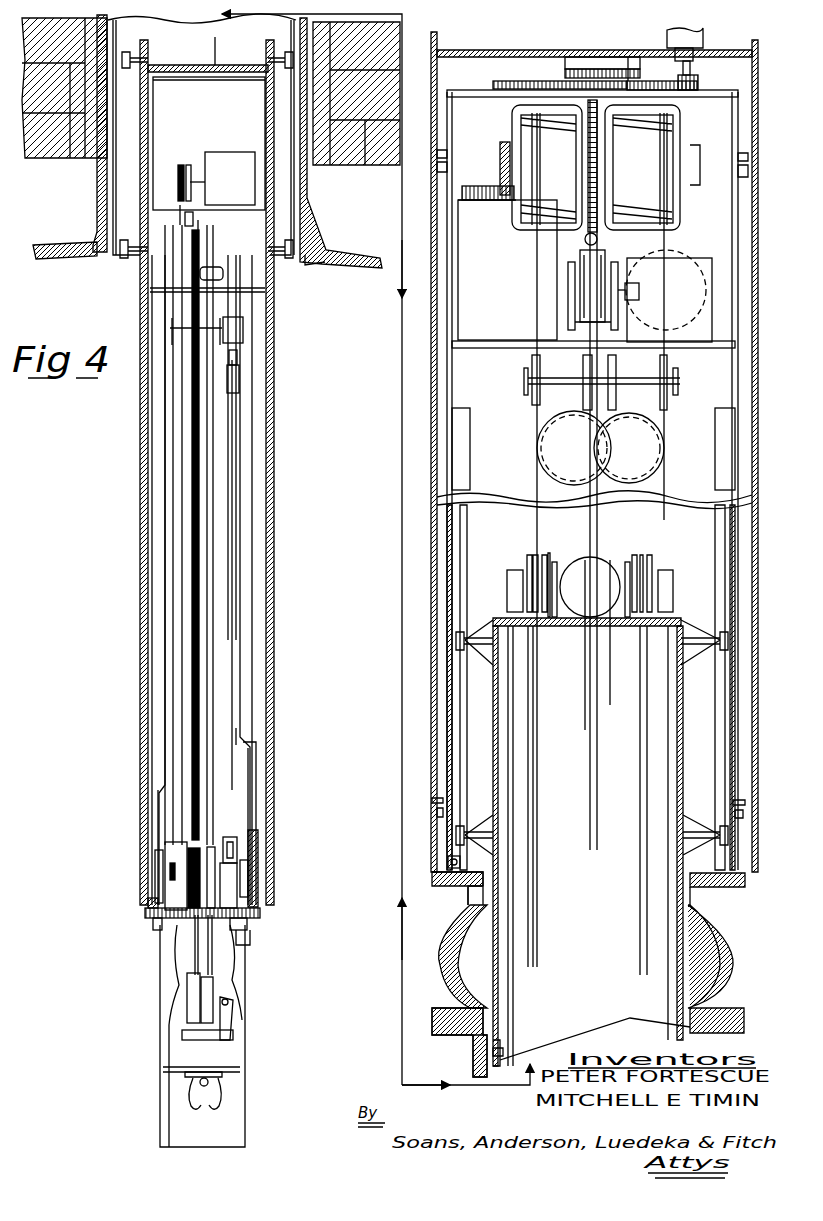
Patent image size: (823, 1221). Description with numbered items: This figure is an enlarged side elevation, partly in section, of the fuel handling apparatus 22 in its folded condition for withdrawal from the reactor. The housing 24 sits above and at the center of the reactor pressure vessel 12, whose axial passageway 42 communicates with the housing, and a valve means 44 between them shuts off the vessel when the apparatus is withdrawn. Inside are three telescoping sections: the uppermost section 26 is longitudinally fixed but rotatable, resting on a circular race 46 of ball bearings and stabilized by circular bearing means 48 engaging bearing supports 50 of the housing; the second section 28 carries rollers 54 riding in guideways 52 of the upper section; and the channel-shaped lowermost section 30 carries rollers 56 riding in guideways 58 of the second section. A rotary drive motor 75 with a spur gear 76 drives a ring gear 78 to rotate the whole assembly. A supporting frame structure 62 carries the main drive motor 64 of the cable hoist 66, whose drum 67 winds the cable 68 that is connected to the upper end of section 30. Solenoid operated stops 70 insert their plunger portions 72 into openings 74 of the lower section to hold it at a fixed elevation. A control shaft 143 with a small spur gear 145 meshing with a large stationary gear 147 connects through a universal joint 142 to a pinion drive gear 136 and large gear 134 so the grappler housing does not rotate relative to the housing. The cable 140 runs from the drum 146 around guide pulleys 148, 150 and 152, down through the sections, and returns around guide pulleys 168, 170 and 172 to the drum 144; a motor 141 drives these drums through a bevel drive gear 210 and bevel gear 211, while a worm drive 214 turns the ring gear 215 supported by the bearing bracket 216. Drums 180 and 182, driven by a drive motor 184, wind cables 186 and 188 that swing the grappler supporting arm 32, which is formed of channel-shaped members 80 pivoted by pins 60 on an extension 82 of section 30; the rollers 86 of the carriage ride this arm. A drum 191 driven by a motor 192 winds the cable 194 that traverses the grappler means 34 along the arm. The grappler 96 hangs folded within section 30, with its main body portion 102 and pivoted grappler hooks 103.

The reactor pressure vessel 12 is at (360, 256).
The fuel handling apparatus 22 is at (404, 389).
The housing 24 is at (98, 184).
The uppermost telescoping section 26 is at (736, 396).
The second telescoping section 28 is at (303, 199).
The third or lowermost telescoping section 30 is at (273, 587).
The grappler supporting arm 32 is at (258, 766).
The grappler means 34 is at (249, 1046).
The axial passageway 42 is at (305, 265).
The valve means 44 is at (733, 933).
The circular race of ball bearings 46 is at (448, 862).
The circular bearing means 48 is at (440, 160).
The bearing supports 50 is at (437, 160).
The guideways or tracks 52 is at (715, 449).
The rollers 54 is at (462, 632).
The rollers 56 is at (130, 58).
The guideways 58 is at (290, 44).
The pins 60 is at (148, 873).
The supporting frame structure 62 is at (480, 344).
The main drive motor 64 is at (696, 287).
The cable hoist 66 is at (612, 258).
The drum 67 is at (580, 264).
The cable 68 is at (215, 53).
The solenoid operated stops 70 is at (505, 1038).
The plunger portion 72 is at (503, 1049).
The openings 74 is at (148, 141).
The rotary drive motor 75 is at (703, 43).
The spur gear 76 is at (698, 86).
The ring gear 78 is at (500, 82).
The channel-shaped members 80 is at (152, 693).
The extension 82 is at (152, 886).
The rollers or wheels 86 is at (150, 899).
The grappler 96 is at (180, 1081).
The main body portion 102 is at (188, 1019).
The grappler hooks 103 is at (222, 1099).
The large gear 134 is at (262, 921).
The pinion drive gear 136 is at (248, 931).
The cable 140 is at (202, 230).
The motor 141 is at (514, 257).
The universal joint 142 is at (626, 293).
The control shaft 143 is at (235, 516).
The grappler operating drum 144 is at (521, 133).
The small spur gear 145 is at (630, 80).
The drum 146 is at (655, 141).
The large stationary gear 147 is at (565, 75).
The guide pulley 148 is at (670, 378).
The guide pulley 150 is at (661, 463).
The guide pulley 152 is at (583, 401).
The guide pulley 168 is at (611, 376).
The guide pulley 170 is at (548, 463).
The guide pulley 172 is at (536, 378).
The drum 180 is at (563, 555).
The drum 182 is at (650, 562).
The drive motor 184 is at (587, 613).
The cable 186 is at (536, 806).
The cable 188 is at (640, 824).
The drum 191 is at (183, 201).
The motor 192 is at (242, 189).
The cable 194 is at (182, 218).
The bevel drive gear 210 is at (490, 193).
The bevel gear 211 is at (500, 163).
The worm drive 214 is at (597, 241).
The ring gear 215 is at (598, 204).
The bearing bracket 216 is at (700, 153).